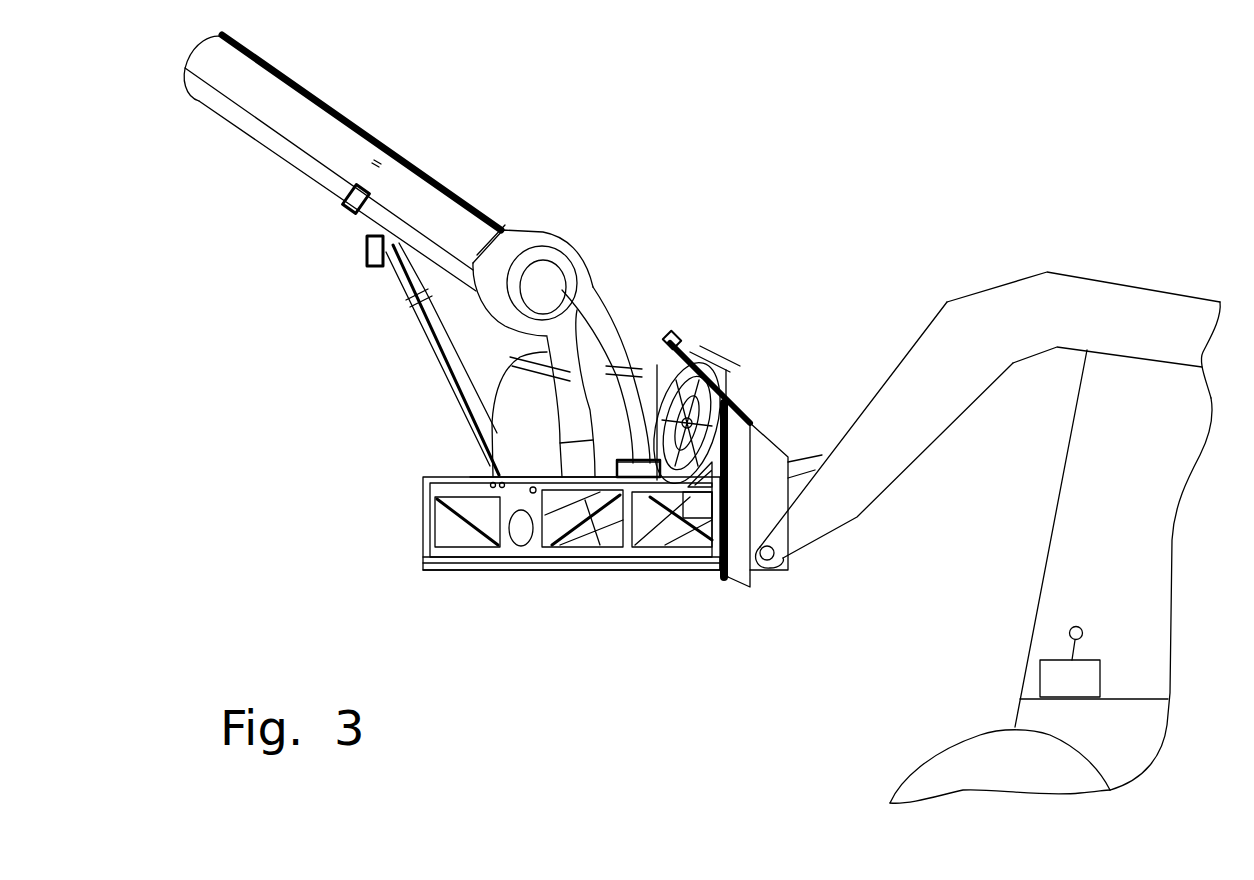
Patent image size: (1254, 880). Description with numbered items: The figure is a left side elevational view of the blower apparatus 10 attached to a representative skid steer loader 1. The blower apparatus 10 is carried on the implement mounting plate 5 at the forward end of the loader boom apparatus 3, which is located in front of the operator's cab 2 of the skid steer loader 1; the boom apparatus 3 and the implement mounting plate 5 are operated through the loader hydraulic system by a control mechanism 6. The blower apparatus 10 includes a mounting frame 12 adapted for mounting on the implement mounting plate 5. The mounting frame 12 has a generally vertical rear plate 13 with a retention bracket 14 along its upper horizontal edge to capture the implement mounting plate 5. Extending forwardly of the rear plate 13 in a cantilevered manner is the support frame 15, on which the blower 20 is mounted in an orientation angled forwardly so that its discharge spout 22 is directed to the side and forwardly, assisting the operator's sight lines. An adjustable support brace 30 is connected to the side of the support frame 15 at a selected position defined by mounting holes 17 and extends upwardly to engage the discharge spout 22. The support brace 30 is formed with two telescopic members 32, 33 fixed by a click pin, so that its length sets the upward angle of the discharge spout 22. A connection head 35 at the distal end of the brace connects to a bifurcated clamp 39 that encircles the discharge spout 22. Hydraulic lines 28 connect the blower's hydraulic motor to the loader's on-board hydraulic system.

The skid steer loader 1 is at (1139, 255).
The operator's cab 2 is at (1103, 543).
The loader boom apparatus 3 is at (1011, 302).
The implement mounting plate 5 is at (763, 503).
The control mechanism 6 is at (1062, 683).
The blower apparatus 10 is at (817, 94).
The mounting frame 12 is at (762, 410).
The rear plate 13 is at (727, 515).
The retention bracket 14 is at (752, 412).
The support frame 15 is at (673, 503).
The mounting holes 17 is at (524, 527).
The blower 20 is at (590, 320).
The discharge spout 22 is at (290, 115).
The hydraulic lines 28 is at (702, 358).
The adjustable support brace 30 is at (385, 395).
The telescopic member 32 is at (470, 420).
The telescopic member 33 is at (393, 278).
The connection head 35 is at (367, 247).
The clamp 39 is at (345, 204).